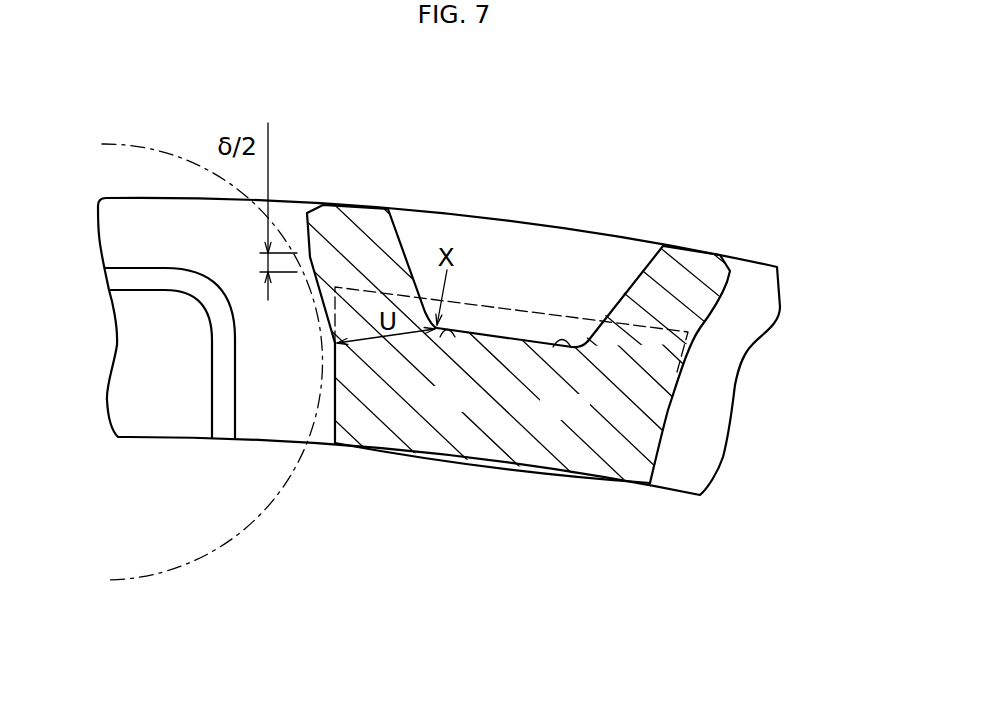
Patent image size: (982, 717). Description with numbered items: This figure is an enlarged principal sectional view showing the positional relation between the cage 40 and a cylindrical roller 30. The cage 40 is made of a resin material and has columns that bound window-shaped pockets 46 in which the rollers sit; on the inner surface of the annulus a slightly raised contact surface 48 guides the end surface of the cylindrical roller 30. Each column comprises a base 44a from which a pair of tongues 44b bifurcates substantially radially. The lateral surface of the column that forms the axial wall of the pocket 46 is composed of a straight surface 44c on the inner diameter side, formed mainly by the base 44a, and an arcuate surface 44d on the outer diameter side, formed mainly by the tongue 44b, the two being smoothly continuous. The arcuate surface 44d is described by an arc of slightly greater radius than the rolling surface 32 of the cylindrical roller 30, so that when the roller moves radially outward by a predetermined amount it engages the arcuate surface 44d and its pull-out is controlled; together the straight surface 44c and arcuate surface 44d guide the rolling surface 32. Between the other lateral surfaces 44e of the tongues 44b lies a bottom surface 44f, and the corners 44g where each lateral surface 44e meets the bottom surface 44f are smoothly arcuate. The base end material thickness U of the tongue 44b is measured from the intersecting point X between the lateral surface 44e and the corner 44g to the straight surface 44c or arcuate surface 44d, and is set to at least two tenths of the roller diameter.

The cylindrical roller 30 is at (220, 555).
The rolling surface 32 is at (267, 517).
The cage 40 is at (747, 213).
The base 44a is at (522, 452).
The tongue 44b is at (353, 217).
The straight surface 44c is at (333, 398).
The arcuate surface 44d is at (325, 300).
The lateral surface 44e is at (403, 252).
The bottom surface 44f is at (497, 337).
The corner 44g is at (450, 337).
The pocket 46 is at (171, 223).
The contact surface 48 is at (158, 420).